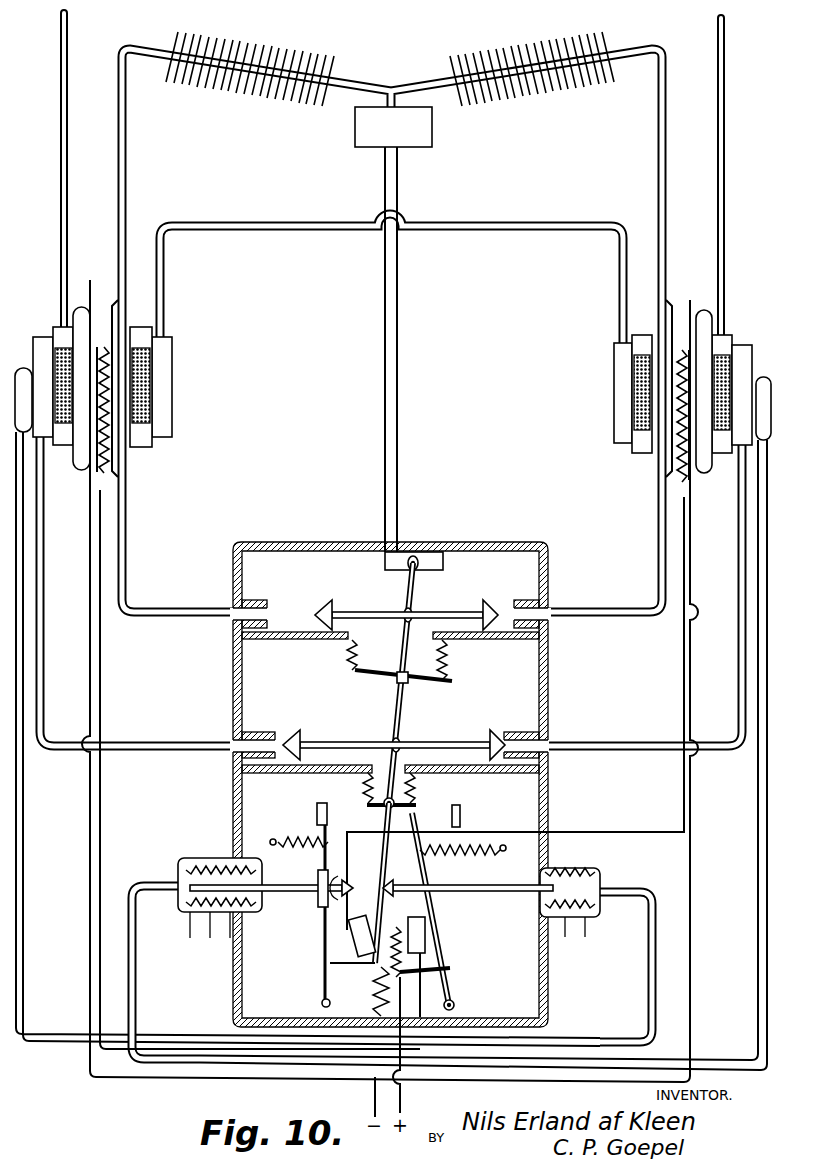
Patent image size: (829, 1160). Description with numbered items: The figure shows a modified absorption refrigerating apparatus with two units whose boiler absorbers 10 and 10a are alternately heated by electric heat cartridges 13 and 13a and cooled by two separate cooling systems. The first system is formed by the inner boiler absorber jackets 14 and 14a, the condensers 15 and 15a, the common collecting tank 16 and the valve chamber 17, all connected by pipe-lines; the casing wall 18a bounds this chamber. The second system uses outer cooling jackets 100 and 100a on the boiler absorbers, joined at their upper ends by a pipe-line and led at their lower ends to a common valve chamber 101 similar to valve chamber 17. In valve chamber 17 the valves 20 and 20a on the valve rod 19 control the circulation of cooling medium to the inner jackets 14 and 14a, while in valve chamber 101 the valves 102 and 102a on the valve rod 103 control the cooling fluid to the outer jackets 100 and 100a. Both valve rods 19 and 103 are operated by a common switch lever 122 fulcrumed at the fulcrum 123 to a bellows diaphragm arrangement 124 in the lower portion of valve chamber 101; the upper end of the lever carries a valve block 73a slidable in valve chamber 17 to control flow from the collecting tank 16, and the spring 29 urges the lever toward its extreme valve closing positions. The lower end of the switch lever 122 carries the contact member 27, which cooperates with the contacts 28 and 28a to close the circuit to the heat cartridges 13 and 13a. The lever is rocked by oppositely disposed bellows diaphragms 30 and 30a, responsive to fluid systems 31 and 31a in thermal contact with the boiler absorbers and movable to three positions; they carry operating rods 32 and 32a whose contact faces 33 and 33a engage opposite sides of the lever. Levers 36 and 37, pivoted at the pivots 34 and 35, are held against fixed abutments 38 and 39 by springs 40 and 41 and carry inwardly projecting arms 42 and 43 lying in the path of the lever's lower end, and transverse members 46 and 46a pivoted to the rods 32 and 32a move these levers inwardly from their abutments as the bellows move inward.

The boiler absorber 10 is at (140, 327).
The boiler absorber 10a is at (728, 345).
The electric heat cartridge 13 is at (110, 455).
The electric heat cartridge 13a is at (676, 462).
The inner boiler absorber jacket 14 is at (80, 307).
The inner boiler absorber jacket 14a is at (700, 318).
The condenser 15 is at (305, 52).
The condenser 15a is at (528, 36).
The collecting tank 16 is at (432, 126).
The valve chamber 17 is at (508, 551).
The housing upper wall 18a is at (340, 533).
The valve rod 19 is at (372, 614).
The valve 20 is at (322, 603).
The valve 20a is at (490, 603).
The contact member 27 is at (391, 943).
The complementary contact member 28 is at (412, 917).
The complementary contact member 28a is at (345, 897).
The spring 29 is at (372, 995).
The bellows diaphragm 30 is at (592, 870).
The bellows diaphragm 30a is at (200, 850).
The fluid system 31 is at (23, 368).
The fluid system 31a is at (765, 380).
The operating rod 32 is at (478, 892).
The operating rod 32a is at (302, 892).
The contact face 33 is at (392, 884).
The contact face 33a is at (352, 884).
The pivot 34 is at (455, 1003).
The pivot 35 is at (322, 1003).
The lever 36 is at (425, 942).
The lever 37 is at (323, 944).
The fixed abutment 38 is at (460, 816).
The fixed abutment 39 is at (317, 812).
The spring 40 is at (500, 852).
The spring 41 is at (278, 840).
The arm 42 is at (450, 968).
The arm 43 is at (366, 963).
The transverse member 46 is at (432, 907).
The transverse member 46a is at (318, 882).
The valve block 73a is at (422, 552).
The outer cooling jacket 100 is at (172, 360).
The outer cooling jacket 100a is at (614, 378).
The valve chamber 101 is at (540, 700).
The valve 102 is at (290, 728).
The valve 102a is at (482, 730).
The valve rod 103 is at (340, 742).
The switch lever 122 is at (385, 843).
The fulcrum 123 is at (385, 808).
The bellows diaphragm arrangement 124 is at (416, 788).